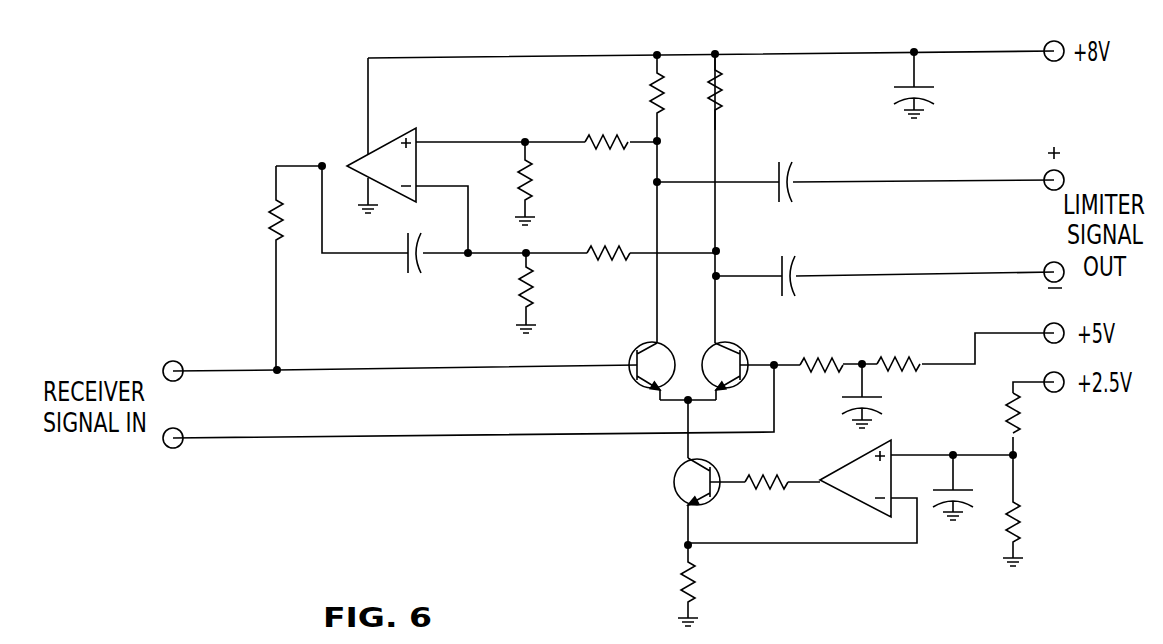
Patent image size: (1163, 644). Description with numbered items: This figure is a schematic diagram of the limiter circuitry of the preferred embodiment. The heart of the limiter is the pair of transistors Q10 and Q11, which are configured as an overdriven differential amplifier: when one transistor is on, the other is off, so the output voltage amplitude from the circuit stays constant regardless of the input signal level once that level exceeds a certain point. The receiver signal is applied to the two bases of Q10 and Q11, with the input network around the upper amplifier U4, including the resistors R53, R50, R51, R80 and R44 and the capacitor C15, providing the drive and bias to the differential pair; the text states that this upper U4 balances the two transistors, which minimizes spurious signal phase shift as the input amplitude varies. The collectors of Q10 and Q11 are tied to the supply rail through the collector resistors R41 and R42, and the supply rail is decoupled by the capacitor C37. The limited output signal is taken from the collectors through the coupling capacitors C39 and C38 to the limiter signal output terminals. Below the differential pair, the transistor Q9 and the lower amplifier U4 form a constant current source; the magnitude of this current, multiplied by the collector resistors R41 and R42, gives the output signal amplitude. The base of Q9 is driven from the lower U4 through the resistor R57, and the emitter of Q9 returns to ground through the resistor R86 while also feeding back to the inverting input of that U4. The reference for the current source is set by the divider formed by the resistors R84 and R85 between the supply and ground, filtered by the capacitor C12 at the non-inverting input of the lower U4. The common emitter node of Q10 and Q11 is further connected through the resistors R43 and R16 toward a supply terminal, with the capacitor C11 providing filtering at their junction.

The collector resistor R41 is at (635, 98).
The collector resistor R42 is at (736, 92).
The capacitor C37 is at (937, 85).
The resistor R50 is at (605, 158).
The resistor R51 is at (506, 183).
The operational amplifier U4 is at (619, 322).
The resistor R53 is at (251, 268).
The capacitor C15 is at (392, 260).
The resistor R44 is at (506, 293).
The resistor R80 is at (608, 270).
The capacitor C39 is at (747, 175).
The capacitor C38 is at (776, 269).
The transistor Q10 is at (634, 360).
The transistor Q11 is at (738, 356).
The resistor R43 is at (820, 348).
The resistor R16 is at (899, 348).
The capacitor C11 is at (885, 396).
The resistor R84 is at (1035, 418).
The resistor R57 is at (766, 465).
The transistor Q9 is at (681, 481).
The resistor R86 is at (669, 585).
The capacitor C12 is at (957, 504).
The resistor R85 is at (1035, 510).